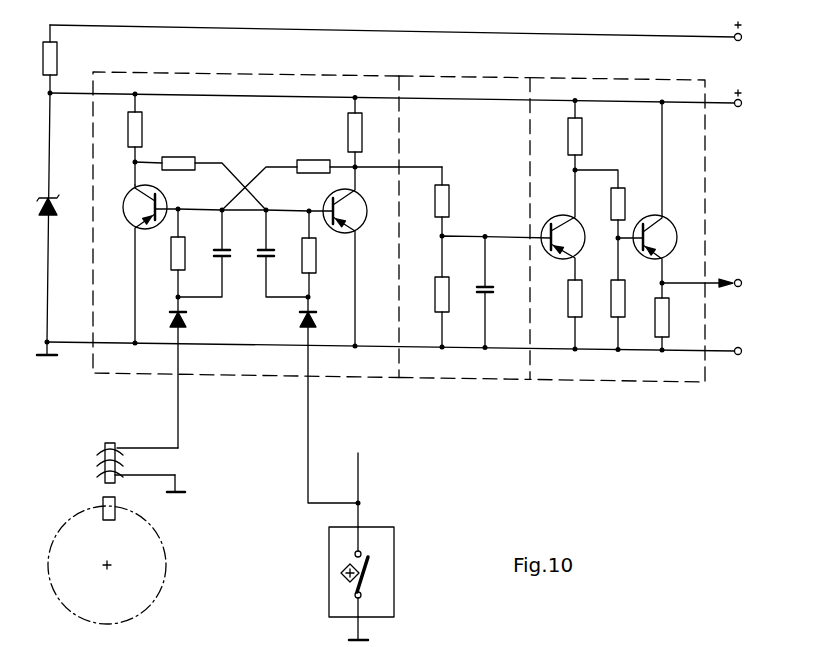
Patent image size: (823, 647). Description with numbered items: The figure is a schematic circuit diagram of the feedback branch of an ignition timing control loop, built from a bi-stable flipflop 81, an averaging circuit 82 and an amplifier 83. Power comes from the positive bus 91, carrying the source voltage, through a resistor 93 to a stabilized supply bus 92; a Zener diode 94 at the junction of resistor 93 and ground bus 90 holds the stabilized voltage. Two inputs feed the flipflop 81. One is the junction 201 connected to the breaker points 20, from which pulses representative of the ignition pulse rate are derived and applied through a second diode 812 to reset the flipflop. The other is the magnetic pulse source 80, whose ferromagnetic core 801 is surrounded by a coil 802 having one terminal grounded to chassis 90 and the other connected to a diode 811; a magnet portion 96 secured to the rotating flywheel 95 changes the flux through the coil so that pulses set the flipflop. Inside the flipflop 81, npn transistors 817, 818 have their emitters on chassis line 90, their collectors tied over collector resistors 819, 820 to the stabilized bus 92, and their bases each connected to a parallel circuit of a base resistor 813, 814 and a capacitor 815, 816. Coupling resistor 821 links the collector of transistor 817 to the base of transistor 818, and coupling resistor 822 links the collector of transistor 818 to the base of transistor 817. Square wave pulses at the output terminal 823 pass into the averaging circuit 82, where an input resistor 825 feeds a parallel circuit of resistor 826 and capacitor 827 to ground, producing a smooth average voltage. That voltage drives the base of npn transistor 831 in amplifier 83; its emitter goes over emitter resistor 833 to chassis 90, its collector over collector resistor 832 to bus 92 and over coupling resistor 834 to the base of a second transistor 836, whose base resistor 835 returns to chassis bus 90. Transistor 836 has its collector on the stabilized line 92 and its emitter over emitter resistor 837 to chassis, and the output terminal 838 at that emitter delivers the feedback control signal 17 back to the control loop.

The feedback control signal 17 is at (719, 280).
The breaker points 20 is at (390, 596).
The pulse source 80 is at (102, 443).
The bi-stable flipflop 81 is at (243, 84).
The averaging circuit 82 is at (465, 85).
The amplifier 83 is at (595, 88).
The ground bus 90 is at (444, 349).
The positive bus 91 is at (375, 31).
The stabilized supply bus 92 is at (264, 97).
The resistor 93 is at (66, 48).
The Zener diode 94 is at (57, 204).
The flywheel 95 is at (152, 594).
The magnet portion 96 is at (103, 505).
The junction 201 is at (360, 503).
The core 801 is at (112, 443).
The coil 802 is at (100, 465).
The first diode 811 is at (187, 322).
The second diode 812 is at (299, 322).
The base resistor 813 is at (172, 257).
The base resistor 814 is at (317, 262).
The capacitor 815 is at (232, 253).
The capacitor 816 is at (276, 253).
The npn transistor 817 is at (125, 218).
The npn transistor 818 is at (367, 217).
The collector resistor 819 is at (142, 129).
The collector resistor 820 is at (362, 135).
The coupling resistor 821 is at (182, 157).
The coupling resistor 822 is at (313, 160).
The output terminal 823 is at (357, 165).
The input resistor 825 is at (449, 204).
The resistor 826 is at (435, 298).
The capacitor 827 is at (495, 289).
The npn transistor 831 is at (552, 219).
The collector resistor 832 is at (582, 145).
The emitter resistor 833 is at (567, 302).
The coupling resistor 834 is at (625, 205).
The base resistor 835 is at (610, 298).
The second transistor 836 is at (677, 233).
The emitter resistor 837 is at (667, 313).
The output terminal 838 is at (726, 299).